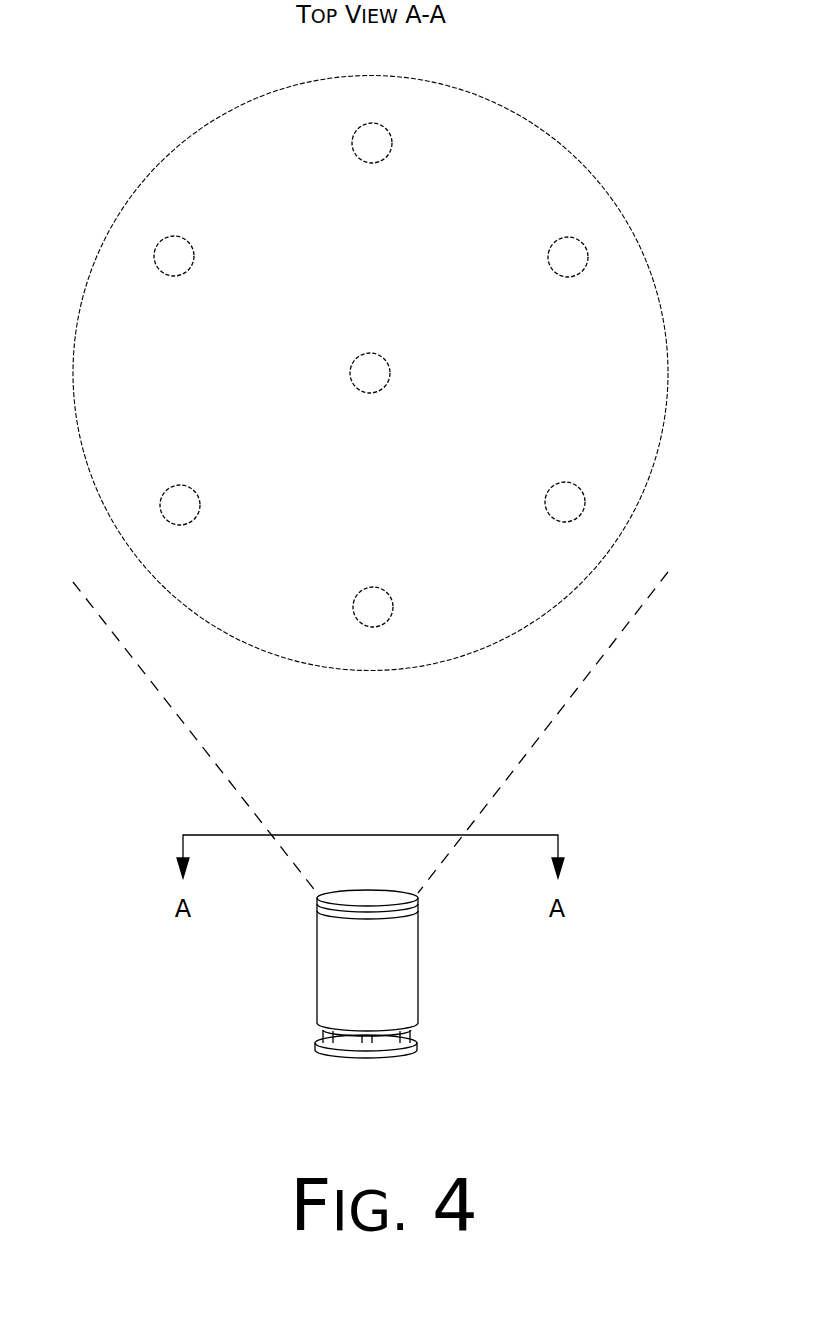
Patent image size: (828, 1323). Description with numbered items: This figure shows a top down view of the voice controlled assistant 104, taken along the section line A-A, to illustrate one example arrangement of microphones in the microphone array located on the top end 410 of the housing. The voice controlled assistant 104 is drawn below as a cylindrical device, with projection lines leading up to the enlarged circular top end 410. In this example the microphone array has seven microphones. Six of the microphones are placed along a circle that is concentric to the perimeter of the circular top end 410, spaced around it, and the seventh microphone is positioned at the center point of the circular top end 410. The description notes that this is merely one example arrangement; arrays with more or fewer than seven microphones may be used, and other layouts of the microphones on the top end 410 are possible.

The top end 410 is at (538, 167).
The voice controlled assistant 104 is at (422, 1056).